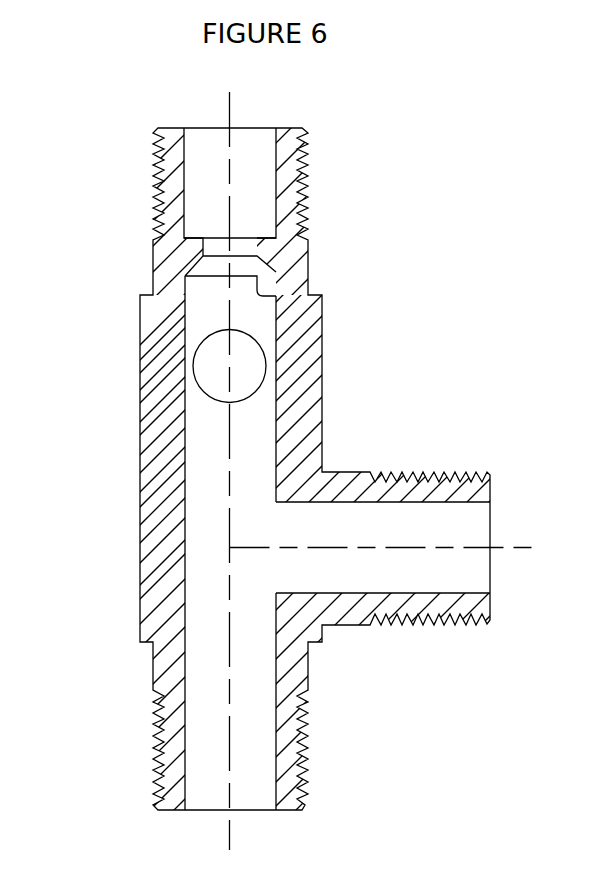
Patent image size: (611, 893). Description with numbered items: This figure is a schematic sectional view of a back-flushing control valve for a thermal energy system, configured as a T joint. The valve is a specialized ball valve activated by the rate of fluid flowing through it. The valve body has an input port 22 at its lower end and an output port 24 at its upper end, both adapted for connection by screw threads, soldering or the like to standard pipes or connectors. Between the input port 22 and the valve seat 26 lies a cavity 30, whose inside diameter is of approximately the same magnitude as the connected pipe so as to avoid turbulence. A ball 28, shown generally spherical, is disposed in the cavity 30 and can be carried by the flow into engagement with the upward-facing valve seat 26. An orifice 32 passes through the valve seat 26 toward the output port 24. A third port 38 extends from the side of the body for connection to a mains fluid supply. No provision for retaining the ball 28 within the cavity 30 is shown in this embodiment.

The input port 22 is at (257, 788).
The output port 24 is at (256, 146).
The valve seat 26 is at (286, 272).
The ball 28 is at (253, 362).
The cavity 30 is at (258, 432).
The orifice 32 is at (213, 279).
The third port 38 is at (473, 512).